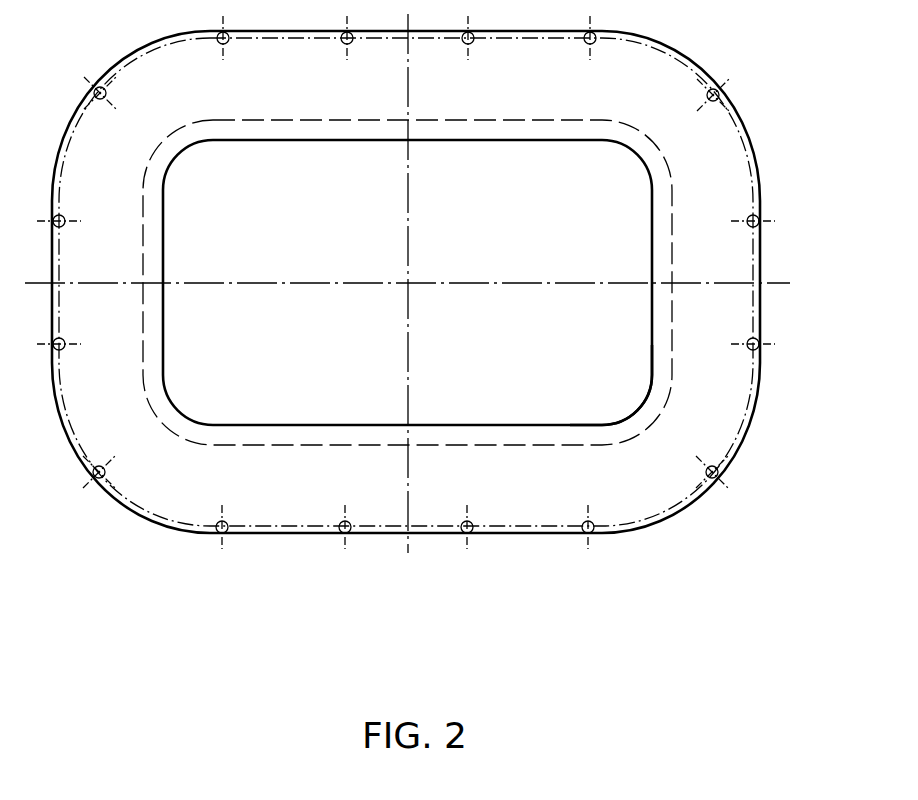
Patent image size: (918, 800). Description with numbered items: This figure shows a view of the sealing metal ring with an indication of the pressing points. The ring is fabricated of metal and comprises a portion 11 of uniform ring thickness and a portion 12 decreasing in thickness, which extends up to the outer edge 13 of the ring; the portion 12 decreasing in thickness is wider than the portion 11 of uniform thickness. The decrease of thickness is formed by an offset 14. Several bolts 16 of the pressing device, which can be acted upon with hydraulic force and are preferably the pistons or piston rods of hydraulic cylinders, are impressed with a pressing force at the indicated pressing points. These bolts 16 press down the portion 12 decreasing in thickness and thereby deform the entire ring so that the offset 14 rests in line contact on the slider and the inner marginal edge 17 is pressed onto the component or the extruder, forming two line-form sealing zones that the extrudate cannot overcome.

The portion of uniform ring thickness 11 is at (314, 432).
The portion decreasing in thickness 12 is at (417, 328).
The outer edge 13 is at (742, 443).
The offset 14 is at (432, 445).
The bolts 16 is at (63, 425).
The inner marginal edge 17 is at (622, 418).